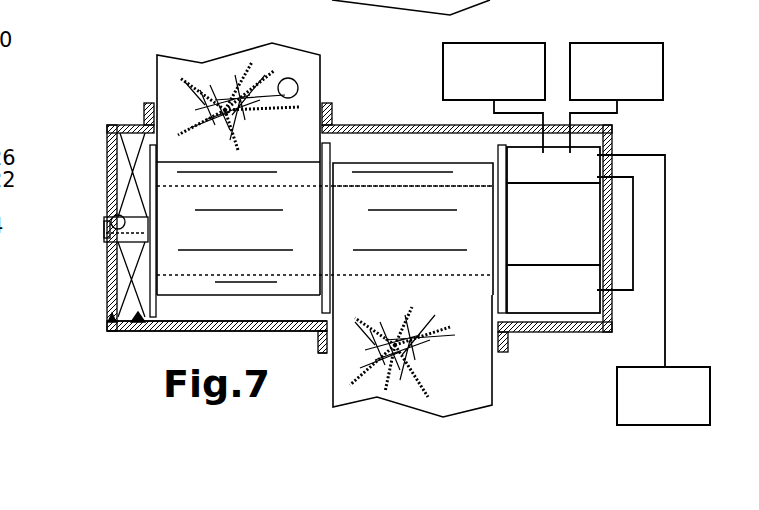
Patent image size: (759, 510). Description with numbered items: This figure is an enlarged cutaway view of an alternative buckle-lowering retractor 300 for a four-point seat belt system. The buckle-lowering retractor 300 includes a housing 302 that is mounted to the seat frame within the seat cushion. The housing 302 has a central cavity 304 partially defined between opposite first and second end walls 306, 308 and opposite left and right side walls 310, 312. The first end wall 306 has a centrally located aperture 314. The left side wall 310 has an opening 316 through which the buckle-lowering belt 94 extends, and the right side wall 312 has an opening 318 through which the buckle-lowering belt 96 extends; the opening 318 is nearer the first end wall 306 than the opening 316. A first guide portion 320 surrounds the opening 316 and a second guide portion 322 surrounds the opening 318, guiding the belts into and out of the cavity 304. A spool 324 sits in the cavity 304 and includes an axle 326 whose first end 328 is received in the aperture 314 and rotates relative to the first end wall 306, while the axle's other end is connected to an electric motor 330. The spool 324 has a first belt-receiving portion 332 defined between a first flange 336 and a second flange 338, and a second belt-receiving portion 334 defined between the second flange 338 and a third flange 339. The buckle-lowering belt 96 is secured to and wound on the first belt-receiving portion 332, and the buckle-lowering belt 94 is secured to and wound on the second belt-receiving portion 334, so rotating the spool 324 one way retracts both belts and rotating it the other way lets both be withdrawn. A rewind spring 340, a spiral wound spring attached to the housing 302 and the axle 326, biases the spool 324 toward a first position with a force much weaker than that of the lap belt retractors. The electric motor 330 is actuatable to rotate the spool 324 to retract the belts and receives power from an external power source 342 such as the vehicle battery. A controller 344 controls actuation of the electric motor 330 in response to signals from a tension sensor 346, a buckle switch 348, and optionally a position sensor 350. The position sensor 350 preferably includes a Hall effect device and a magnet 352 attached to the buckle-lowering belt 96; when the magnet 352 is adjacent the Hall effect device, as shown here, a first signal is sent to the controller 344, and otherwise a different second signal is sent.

The buckle-lowering belt 94 is at (475, 393).
The buckle-lowering belt 96 is at (188, 76).
The buckle-lowering retractor 300 is at (137, 343).
The housing 302 is at (160, 336).
The central cavity 304 is at (401, 161).
The first end wall 306 is at (115, 292).
The second end wall 308 is at (613, 137).
The left side wall 310 is at (298, 332).
The right side wall 312 is at (358, 125).
The aperture 314 is at (114, 216).
The opening 316 is at (325, 358).
The opening 318 is at (327, 100).
The first guide portion 320 is at (510, 343).
The second guide portion 322 is at (143, 110).
The spool 324 is at (135, 328).
The axle 326 is at (135, 235).
The first end 328 is at (104, 228).
The electric motor 330 is at (590, 248).
The first belt-receiving portion 332 is at (268, 277).
The second belt-receiving portion 334 is at (450, 183).
The first flange 336 is at (147, 143).
The second flange 338 is at (320, 303).
The third flange 339 is at (497, 292).
The rewind spring 340 is at (110, 328).
The power source 342 is at (618, 385).
The controller 344 is at (597, 163).
The tension sensor 346 is at (593, 302).
The buckle switch 348 is at (635, 43).
The position sensor 350 is at (528, 43).
The magnet 352 is at (295, 79).